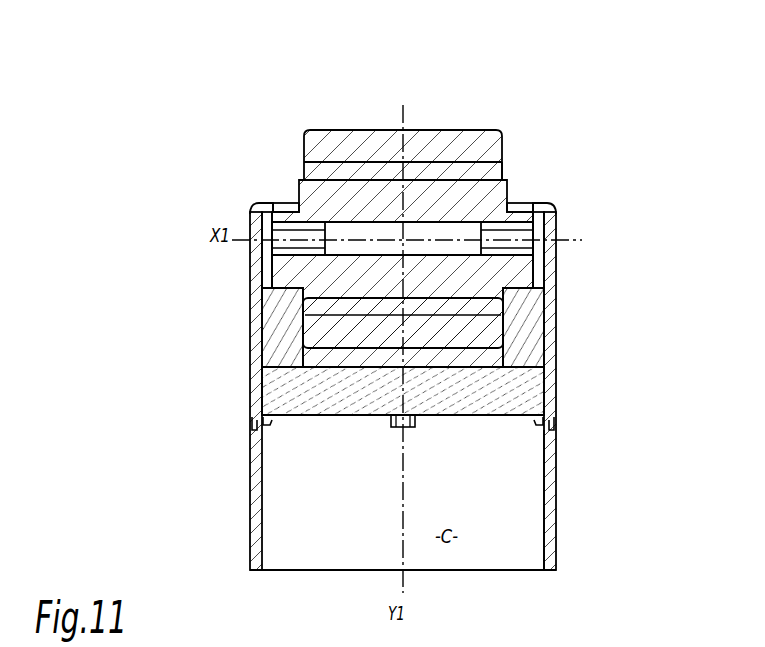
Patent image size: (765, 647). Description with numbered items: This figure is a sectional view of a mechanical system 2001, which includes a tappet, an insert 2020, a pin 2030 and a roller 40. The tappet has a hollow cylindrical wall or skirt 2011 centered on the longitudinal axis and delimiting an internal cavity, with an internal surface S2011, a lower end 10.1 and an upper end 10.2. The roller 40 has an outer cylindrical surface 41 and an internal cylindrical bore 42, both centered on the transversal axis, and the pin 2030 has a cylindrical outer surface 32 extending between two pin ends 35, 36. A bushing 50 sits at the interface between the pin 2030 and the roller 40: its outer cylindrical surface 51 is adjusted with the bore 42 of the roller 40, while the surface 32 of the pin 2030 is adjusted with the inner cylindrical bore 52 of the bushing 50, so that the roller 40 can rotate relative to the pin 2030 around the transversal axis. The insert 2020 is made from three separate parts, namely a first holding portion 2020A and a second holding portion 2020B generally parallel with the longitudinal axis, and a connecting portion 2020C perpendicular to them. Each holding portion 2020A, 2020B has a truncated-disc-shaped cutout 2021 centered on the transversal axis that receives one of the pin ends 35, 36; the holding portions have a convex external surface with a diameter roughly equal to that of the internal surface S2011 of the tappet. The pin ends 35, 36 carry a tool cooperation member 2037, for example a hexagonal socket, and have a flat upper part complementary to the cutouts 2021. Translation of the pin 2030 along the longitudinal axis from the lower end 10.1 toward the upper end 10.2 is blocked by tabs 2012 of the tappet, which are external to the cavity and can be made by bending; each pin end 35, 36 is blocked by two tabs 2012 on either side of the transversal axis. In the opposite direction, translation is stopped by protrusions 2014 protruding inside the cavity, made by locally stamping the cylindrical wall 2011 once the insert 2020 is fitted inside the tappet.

The mechanical system 2001 is at (526, 122).
The pin 2030 is at (342, 190).
The roller 40 is at (460, 137).
The outer cylindrical surface 41 is at (386, 128).
The internal cylindrical bore 42 is at (458, 164).
The cylindrical outer surface 32 is at (478, 175).
The bushing 50 is at (493, 172).
The tabs 2012 is at (283, 233).
The tool cooperation member 2037 is at (280, 201).
The upper end 10.2 is at (260, 206).
The pin end 35 is at (283, 273).
The pin end 36 is at (517, 272).
The cutout 2021 is at (263, 282).
The inner cylindrical bore 52 is at (364, 296).
The first holding portion 2020A is at (280, 349).
The second holding portion 2020B is at (522, 335).
The connecting portion 2020C is at (520, 397).
The outer cylindrical surface 51 is at (285, 403).
The insert 2020 is at (258, 406).
The protrusions 2014 is at (395, 430).
The cylindrical wall 2011 is at (257, 531).
The lower end 10.1 is at (258, 571).
The internal surface S2011 is at (543, 514).